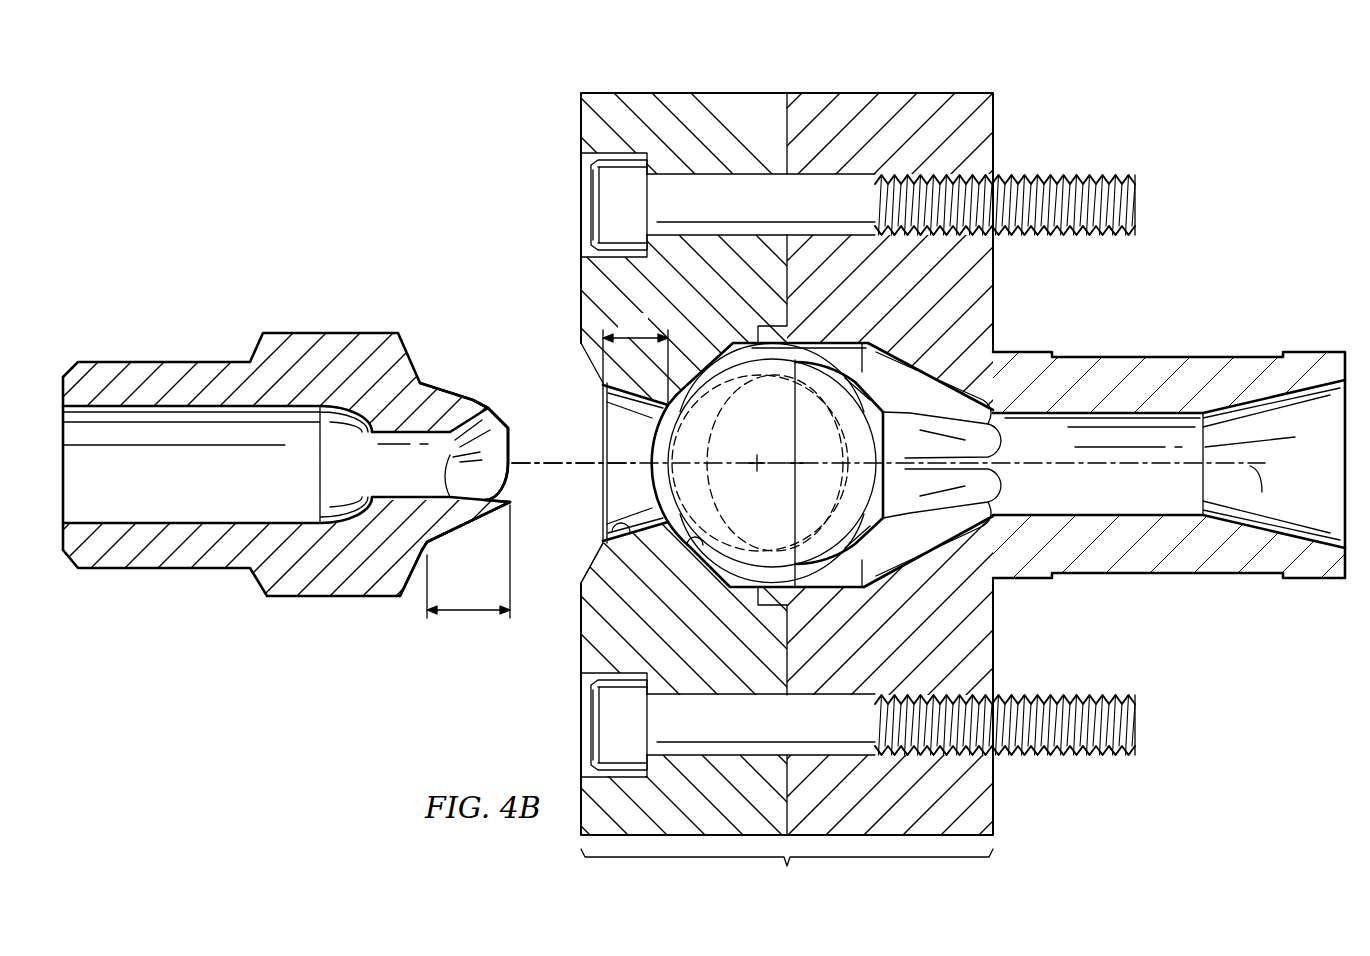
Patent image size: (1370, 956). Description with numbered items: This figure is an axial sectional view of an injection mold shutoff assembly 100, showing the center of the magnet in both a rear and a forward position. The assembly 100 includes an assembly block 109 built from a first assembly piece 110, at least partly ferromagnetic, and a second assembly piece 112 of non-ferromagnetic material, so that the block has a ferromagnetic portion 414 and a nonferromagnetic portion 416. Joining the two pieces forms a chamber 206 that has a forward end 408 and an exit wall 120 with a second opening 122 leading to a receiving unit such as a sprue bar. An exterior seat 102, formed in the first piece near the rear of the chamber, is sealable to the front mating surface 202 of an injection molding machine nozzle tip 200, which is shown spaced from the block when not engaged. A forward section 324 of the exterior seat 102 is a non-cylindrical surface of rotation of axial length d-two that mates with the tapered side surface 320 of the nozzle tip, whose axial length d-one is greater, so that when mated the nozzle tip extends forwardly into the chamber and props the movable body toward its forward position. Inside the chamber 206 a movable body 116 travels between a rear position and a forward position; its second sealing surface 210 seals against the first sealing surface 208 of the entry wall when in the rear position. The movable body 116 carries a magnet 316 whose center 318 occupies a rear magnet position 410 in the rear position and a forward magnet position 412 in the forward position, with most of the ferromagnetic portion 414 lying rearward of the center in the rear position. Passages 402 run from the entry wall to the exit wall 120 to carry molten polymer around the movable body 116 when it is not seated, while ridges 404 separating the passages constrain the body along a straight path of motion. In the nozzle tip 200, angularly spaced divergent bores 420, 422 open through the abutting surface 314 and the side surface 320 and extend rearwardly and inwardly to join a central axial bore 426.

The injection mold shutoff assembly 100 is at (438, 166).
The exterior seat 102 is at (598, 408).
The assembly block 109 is at (787, 873).
The first assembly piece 110 is at (687, 802).
The second assembly piece 112 is at (824, 802).
The movable body 116 is at (638, 478).
The exit wall 120 is at (985, 400).
The second opening 122 is at (1000, 505).
The nozzle tip 200 is at (300, 333).
The front mating surface 202 is at (470, 396).
The chamber 206 is at (878, 560).
The first sealing surface 208 is at (700, 565).
The second sealing surface 210 is at (652, 447).
The abutting surface 314 is at (515, 505).
The magnet 316 is at (694, 386).
The magnet center 318 is at (758, 455).
The side surface 320 is at (452, 548).
The forward section 324 is at (603, 549).
The passages 402 is at (920, 375).
The ridges 404 is at (997, 415).
The forward end 408 is at (925, 537).
The rear magnet position 410 is at (722, 517).
The forward magnet position 412 is at (796, 455).
The ferromagnetic portion 414 is at (645, 105).
The nonferromagnetic portion 416 is at (848, 105).
The divergent bore 420 is at (512, 447).
The divergent bore 422 is at (438, 466).
The central axial bore 426 is at (366, 456).